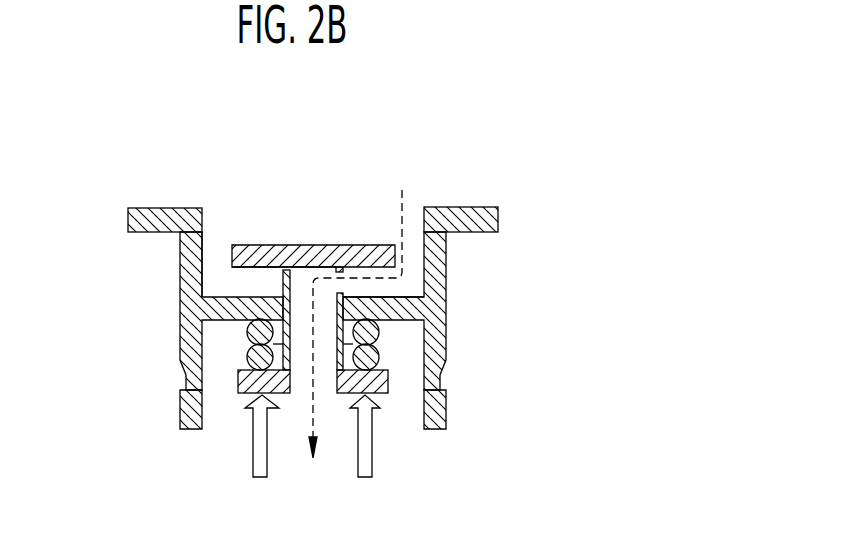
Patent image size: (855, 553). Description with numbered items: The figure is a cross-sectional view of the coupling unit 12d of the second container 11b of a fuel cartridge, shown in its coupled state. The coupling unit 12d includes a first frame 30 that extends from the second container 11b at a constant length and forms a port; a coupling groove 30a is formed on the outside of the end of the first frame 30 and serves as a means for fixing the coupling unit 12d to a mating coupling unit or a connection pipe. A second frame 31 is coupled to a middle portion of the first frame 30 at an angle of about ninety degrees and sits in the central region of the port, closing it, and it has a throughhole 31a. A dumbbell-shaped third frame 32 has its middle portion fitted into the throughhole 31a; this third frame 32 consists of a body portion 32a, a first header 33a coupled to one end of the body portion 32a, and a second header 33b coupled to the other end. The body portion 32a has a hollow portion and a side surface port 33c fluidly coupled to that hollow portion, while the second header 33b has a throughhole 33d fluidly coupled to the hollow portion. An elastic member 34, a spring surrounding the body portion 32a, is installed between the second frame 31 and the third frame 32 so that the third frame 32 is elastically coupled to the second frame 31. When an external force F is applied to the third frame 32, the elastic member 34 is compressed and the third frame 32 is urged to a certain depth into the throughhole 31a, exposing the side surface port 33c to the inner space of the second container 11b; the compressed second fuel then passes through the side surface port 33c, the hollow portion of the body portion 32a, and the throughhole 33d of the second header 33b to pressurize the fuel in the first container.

The second container 11b is at (128, 220).
The coupling unit 12d is at (428, 121).
The first frame 30 is at (180, 268).
The coupling groove 30a is at (180, 383).
The second frame 31 is at (412, 296).
The throughhole 31a is at (222, 296).
The third frame 32 is at (318, 236).
The body portion 32a is at (250, 263).
The first header 33a is at (362, 258).
The second header 33b is at (382, 395).
The side surface port 33c is at (336, 271).
The throughhole 33d is at (302, 383).
The elastic member 34 is at (376, 362).
The force F is at (312, 452).